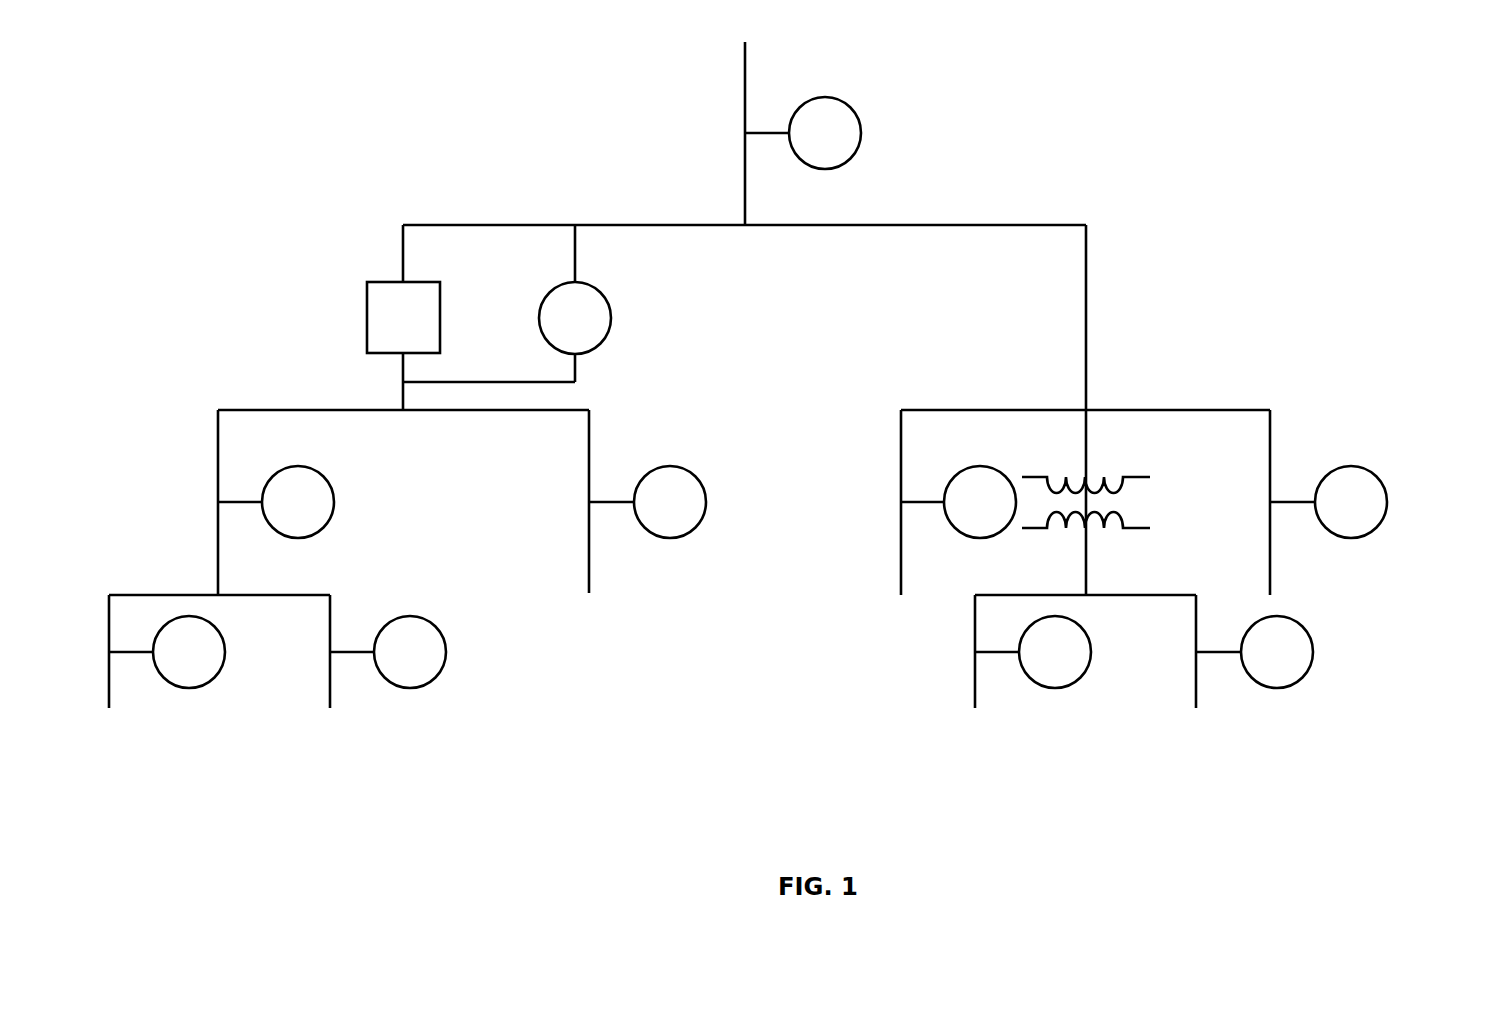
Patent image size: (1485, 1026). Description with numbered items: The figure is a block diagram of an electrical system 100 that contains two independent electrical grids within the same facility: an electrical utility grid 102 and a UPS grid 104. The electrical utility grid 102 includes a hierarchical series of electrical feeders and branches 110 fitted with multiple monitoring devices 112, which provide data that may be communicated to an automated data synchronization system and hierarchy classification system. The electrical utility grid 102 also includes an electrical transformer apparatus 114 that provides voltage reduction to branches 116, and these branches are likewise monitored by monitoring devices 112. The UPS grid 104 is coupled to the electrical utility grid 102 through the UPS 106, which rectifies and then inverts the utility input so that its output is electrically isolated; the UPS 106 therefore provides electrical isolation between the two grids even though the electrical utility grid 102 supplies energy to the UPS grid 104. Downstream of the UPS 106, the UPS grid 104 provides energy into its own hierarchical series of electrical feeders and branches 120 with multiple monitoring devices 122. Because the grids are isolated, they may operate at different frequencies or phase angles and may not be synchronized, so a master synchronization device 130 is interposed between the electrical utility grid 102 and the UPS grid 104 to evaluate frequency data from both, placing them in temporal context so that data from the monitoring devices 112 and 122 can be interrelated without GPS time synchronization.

The electrical system 100 is at (947, 100).
The electrical utility grid 102 is at (965, 198).
The UPS grid 104 is at (263, 384).
The UPS 106 is at (367, 318).
The master synchronization device 130 is at (611, 318).
The electrical feeders and branches 110 is at (1086, 363).
The monitoring devices 112 is at (981, 466).
The electrical transformer apparatus 114 is at (1034, 530).
The branches 116 is at (975, 681).
The electrical feeders and branches 120 is at (218, 456).
The monitoring devices 122 is at (334, 502).